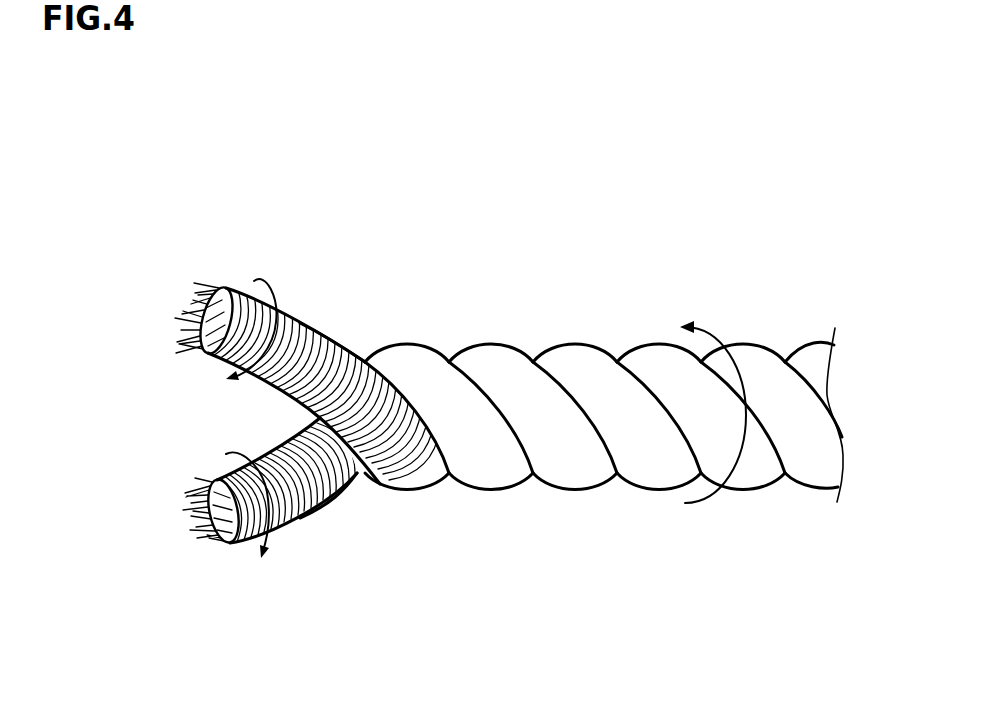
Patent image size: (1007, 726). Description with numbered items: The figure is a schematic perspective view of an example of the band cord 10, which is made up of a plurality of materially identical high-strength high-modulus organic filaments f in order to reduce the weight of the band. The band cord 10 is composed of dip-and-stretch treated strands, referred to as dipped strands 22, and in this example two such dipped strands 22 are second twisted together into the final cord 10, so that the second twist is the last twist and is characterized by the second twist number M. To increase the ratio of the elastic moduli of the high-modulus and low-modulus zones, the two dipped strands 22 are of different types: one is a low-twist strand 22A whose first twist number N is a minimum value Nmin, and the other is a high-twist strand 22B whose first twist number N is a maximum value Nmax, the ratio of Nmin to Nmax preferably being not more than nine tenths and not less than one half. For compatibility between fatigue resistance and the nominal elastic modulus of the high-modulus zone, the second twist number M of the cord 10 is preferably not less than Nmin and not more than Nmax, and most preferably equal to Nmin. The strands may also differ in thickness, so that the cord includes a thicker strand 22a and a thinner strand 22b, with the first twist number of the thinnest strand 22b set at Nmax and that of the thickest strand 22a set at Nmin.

The band cord 10 is at (585, 270).
The dipped strands 22 is at (317, 418).
The low-twist strand 22A is at (317, 342).
The high-twist strand 22B is at (311, 498).
The thicker strand 22a is at (351, 364).
The thinner strand 22b is at (349, 478).
The organic filaments f is at (200, 284).
The first twist number N is at (200, 368).
The minimum value of first twist number Nmin is at (258, 279).
The maximum value of first twist number Nmax is at (237, 450).
The second twist number M is at (724, 334).